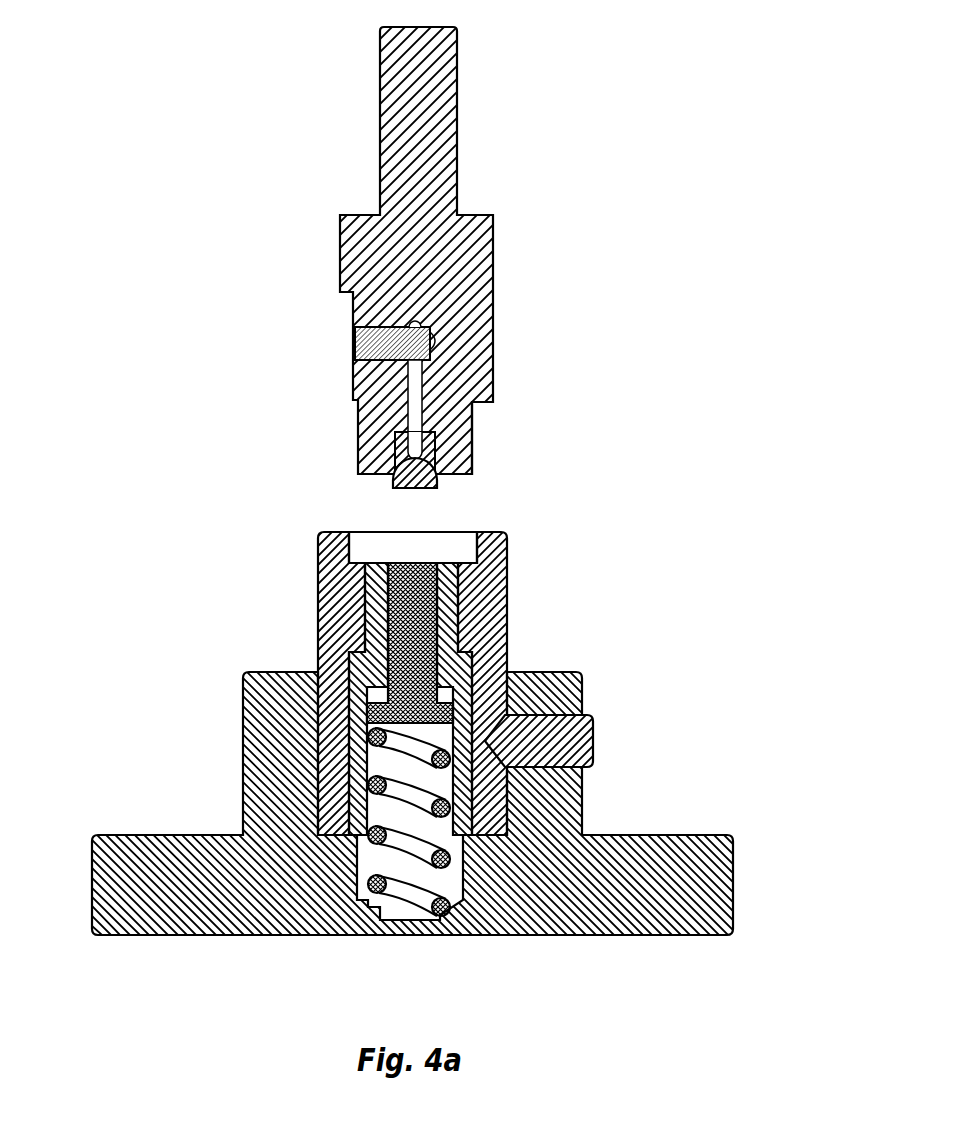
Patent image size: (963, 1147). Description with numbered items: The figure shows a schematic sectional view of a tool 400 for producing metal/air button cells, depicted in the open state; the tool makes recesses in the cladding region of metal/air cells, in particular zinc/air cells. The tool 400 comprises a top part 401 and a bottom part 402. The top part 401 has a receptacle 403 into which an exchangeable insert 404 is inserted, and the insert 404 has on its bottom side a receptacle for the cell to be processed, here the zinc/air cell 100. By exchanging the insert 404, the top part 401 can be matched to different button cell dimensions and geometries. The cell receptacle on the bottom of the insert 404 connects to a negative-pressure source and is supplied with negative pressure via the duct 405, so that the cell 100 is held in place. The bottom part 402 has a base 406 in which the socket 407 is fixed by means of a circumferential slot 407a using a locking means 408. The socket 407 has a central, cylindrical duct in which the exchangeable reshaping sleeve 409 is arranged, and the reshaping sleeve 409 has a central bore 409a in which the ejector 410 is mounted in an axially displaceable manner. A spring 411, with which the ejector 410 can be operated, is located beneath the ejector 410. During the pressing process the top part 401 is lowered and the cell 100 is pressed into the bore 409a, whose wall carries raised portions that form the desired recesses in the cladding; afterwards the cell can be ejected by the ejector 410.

The tool 400 is at (179, 93).
The top part 401 is at (535, 260).
The bottom part 402 is at (630, 665).
The receptacle 403 is at (410, 455).
The exchangeable insert 404 is at (455, 438).
The duct 405 is at (378, 345).
The zinc/air cell 100 is at (405, 484).
The base 406 is at (283, 775).
The socket 407 is at (483, 613).
The circumferential slot 407a is at (458, 540).
The locking means 408 is at (595, 742).
The reshaping sleeve 409 is at (373, 592).
The central bore 409a is at (447, 582).
The ejector 410 is at (405, 633).
The spring 411 is at (420, 898).